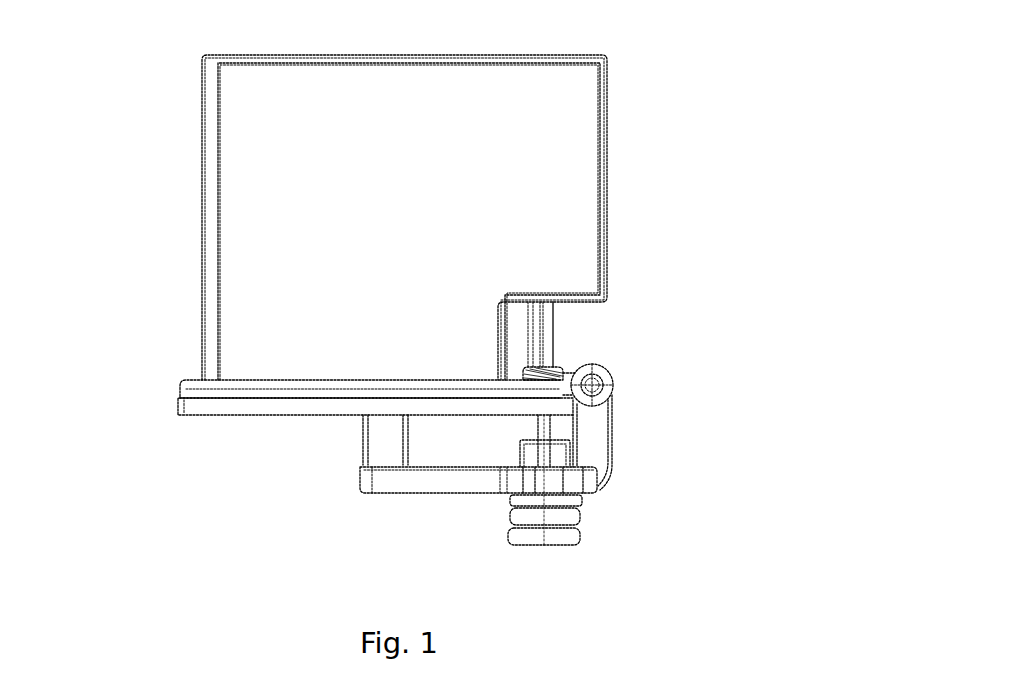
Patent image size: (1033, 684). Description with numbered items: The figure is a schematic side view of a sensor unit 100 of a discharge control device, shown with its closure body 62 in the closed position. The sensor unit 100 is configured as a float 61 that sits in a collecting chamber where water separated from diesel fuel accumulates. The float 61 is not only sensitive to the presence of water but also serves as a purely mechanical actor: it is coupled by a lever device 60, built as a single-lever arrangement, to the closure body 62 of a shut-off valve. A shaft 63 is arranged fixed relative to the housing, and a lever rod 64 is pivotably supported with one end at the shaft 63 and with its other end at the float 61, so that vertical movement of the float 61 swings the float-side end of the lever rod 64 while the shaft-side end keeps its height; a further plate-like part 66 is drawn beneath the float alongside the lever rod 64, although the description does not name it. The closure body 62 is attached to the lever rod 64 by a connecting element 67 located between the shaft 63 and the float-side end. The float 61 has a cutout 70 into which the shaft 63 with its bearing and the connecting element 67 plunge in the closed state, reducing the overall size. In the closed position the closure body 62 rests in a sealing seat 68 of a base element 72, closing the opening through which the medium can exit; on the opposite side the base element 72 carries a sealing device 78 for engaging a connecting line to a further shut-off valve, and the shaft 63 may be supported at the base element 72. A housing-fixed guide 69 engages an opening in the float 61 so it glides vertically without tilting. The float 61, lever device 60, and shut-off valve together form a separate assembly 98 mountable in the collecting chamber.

The sensor unit 100 is at (197, 87).
The separate assembly 98 is at (692, 121).
The float 61 is at (396, 203).
The lever device 60 is at (255, 346).
The lever rod 64 is at (318, 375).
The mounting plate 66 is at (185, 398).
The cutout 70 is at (513, 337).
The shaft 63 is at (594, 384).
The sealing seat 68 is at (582, 488).
The connecting element 67 is at (543, 425).
The guide 69 is at (372, 443).
The base element 72 is at (418, 498).
The closure body 62 is at (518, 483).
The sealing device 78 is at (548, 532).